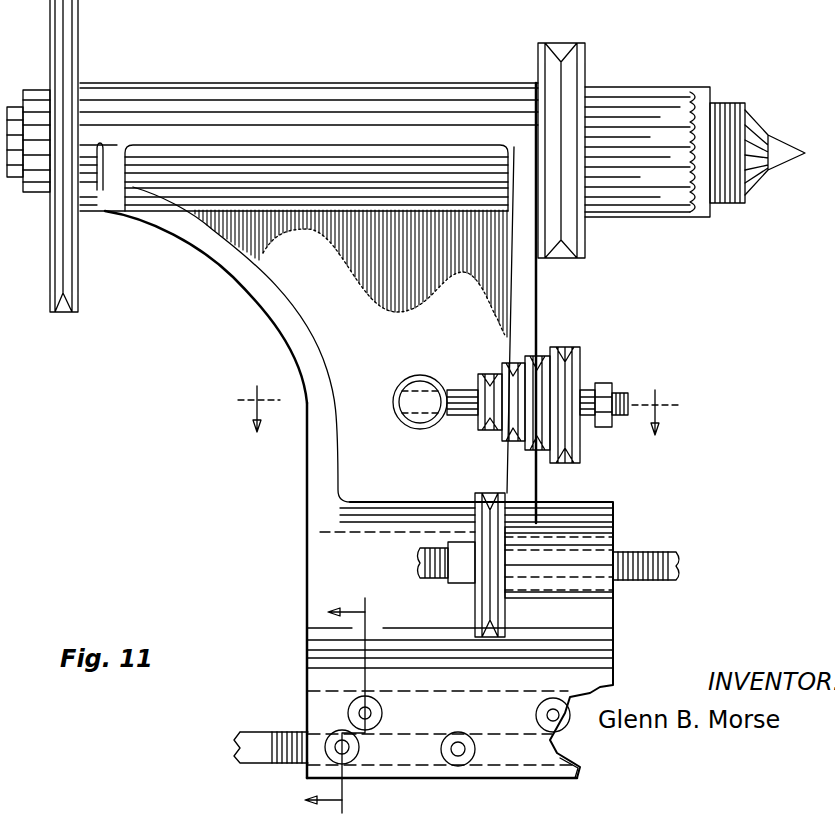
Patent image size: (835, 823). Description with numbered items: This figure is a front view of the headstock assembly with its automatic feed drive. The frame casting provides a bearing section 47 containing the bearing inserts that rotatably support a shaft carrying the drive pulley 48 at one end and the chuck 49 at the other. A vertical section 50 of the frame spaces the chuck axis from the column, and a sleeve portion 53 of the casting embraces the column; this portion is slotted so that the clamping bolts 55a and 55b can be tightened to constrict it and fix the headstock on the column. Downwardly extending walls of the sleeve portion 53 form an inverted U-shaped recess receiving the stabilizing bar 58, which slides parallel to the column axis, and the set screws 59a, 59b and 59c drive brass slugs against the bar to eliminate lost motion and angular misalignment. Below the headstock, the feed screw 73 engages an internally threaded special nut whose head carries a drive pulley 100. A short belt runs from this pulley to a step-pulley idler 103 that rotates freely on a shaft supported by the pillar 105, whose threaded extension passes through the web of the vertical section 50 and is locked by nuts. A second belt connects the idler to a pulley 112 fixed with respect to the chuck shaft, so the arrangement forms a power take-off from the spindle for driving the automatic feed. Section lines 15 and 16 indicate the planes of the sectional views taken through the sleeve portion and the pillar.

The bearing section 47 is at (298, 82).
The drive pulley 48 is at (83, 25).
The chuck 49 is at (668, 217).
The vertical section 50 is at (270, 310).
The sleeve portion 53 is at (307, 634).
The clamping bolt 55a is at (383, 713).
The clamping bolt 55b is at (536, 714).
The stabilizing bar 58 is at (270, 733).
The set screw 59a is at (360, 747).
The set screw 59b is at (460, 767).
The set screw 59c is at (568, 778).
The feed screw 73 is at (652, 552).
The drive pulley 100 is at (498, 492).
The step-pulley idler 103 is at (578, 352).
The pillar 105 is at (411, 381).
The pulley 112 is at (583, 247).
The section line 15- 15 is at (359, 707).
The section line 16- 16 is at (458, 396).